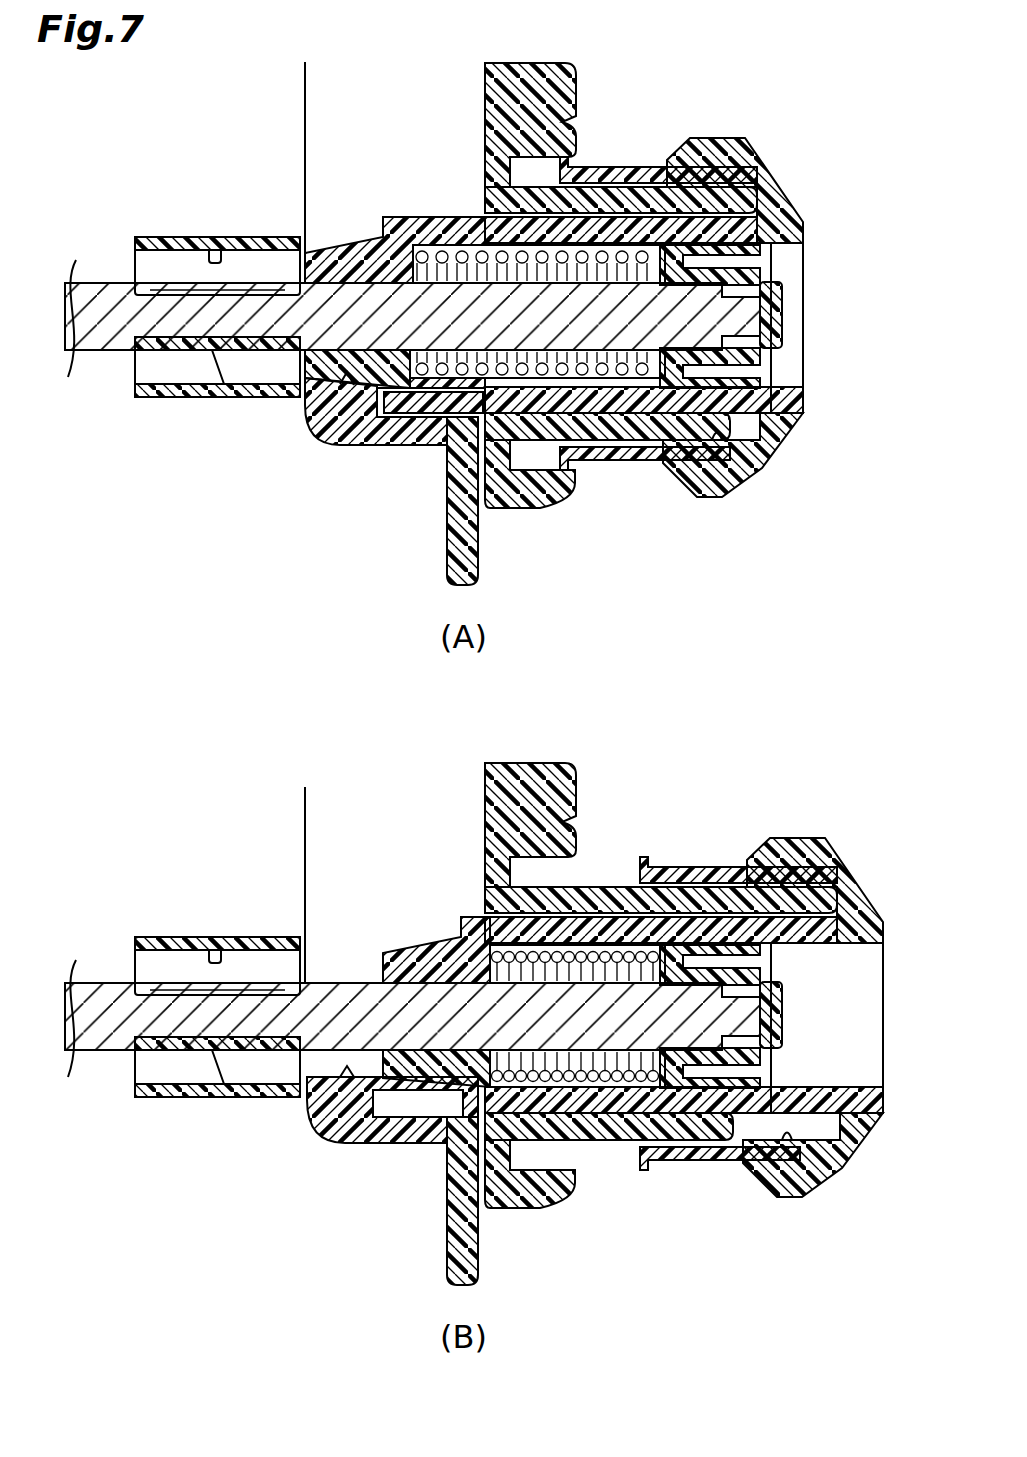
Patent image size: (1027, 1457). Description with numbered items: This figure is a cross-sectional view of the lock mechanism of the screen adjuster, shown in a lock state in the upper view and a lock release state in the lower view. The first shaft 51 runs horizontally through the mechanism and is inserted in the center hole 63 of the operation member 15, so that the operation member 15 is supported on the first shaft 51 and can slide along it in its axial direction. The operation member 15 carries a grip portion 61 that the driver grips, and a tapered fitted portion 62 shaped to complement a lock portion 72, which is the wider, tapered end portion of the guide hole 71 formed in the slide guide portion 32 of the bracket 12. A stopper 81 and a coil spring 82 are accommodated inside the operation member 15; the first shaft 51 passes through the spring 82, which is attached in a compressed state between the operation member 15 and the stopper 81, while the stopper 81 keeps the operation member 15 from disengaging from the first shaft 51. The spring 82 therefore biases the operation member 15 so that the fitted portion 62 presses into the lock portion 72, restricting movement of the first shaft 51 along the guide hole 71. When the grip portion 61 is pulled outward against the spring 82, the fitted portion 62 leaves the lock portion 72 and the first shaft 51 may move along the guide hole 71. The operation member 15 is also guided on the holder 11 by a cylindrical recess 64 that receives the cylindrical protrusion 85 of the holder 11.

The holder 11 is at (533, 514).
The bracket 12 is at (423, 453).
The operation member 15 is at (778, 124).
The slide guide portion 32 is at (305, 78).
The first shaft 51 is at (97, 283).
The grip portion 61 is at (730, 137).
The fitted portion 62 is at (364, 402).
The center hole 63 is at (347, 292).
The cylindrical recess 64 is at (717, 440).
The guide hole 71 is at (334, 141).
The lock portion 72 is at (333, 402).
The stopper 81 is at (775, 272).
The spring 82 is at (613, 262).
The cylindrical protrusion 85 is at (627, 443).